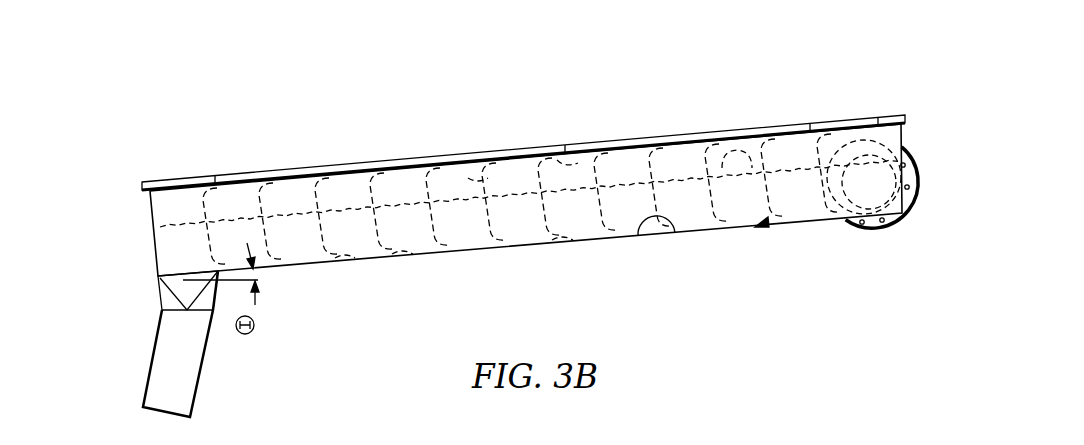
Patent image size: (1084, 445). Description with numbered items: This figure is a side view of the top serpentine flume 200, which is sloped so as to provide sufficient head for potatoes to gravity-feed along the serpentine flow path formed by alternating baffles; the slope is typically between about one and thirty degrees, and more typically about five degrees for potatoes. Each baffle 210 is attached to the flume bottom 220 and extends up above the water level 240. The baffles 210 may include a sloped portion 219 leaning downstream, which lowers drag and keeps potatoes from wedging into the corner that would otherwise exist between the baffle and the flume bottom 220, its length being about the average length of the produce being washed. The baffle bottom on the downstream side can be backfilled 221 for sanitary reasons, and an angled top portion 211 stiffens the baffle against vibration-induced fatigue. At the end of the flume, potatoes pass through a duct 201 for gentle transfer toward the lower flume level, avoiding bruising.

The serpentine flume 200 is at (624, 74).
The duct 201 is at (202, 372).
The baffle 210 is at (330, 188).
The angled top portion 211 is at (572, 161).
The sloped portion 219 is at (352, 262).
The flume bottom 220 is at (675, 233).
The backfill 221 is at (768, 220).
The water level 240 is at (733, 140).